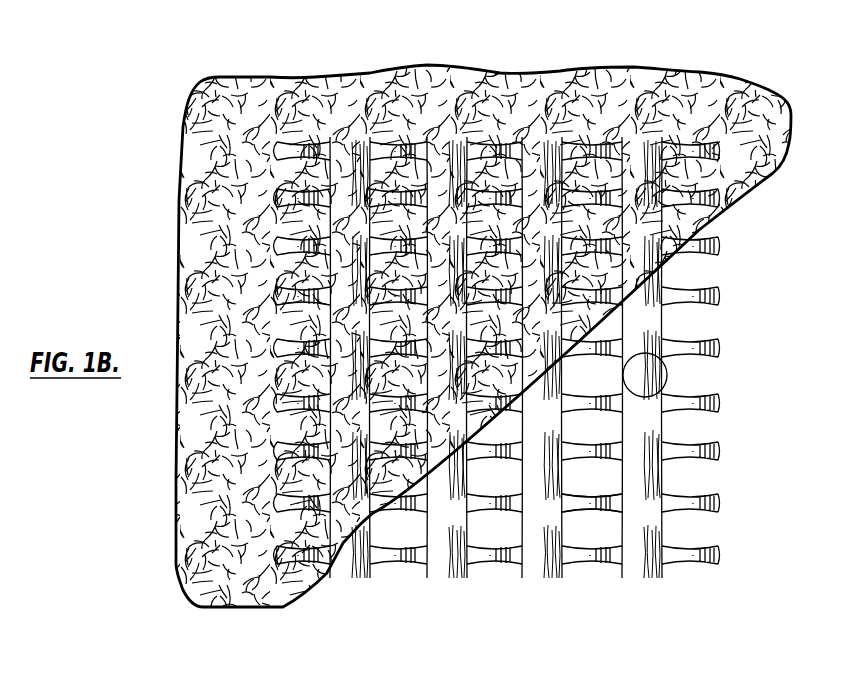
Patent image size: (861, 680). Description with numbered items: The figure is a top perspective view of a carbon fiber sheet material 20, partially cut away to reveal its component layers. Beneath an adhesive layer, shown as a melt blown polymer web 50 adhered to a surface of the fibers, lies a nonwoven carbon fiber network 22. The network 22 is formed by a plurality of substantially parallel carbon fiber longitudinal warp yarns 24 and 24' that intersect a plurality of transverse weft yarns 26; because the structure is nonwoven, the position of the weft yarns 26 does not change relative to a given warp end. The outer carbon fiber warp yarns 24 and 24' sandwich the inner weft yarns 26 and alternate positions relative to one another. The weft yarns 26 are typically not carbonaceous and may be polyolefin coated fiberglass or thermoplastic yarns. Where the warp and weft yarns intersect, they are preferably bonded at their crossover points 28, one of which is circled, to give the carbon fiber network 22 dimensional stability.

The carbon fiber sheet material 20 is at (567, 47).
The melt blown polymer web 50 is at (348, 93).
The carbon fiber network 22 is at (728, 405).
The carbon fiber warp yarn 24 is at (557, 357).
The carbon fiber warp yarn 24' is at (620, 561).
The weft yarn 26 is at (513, 487).
The crossover point 28 is at (663, 362).